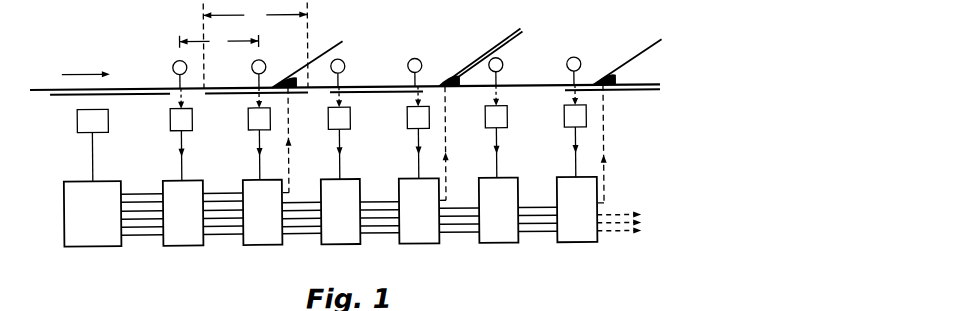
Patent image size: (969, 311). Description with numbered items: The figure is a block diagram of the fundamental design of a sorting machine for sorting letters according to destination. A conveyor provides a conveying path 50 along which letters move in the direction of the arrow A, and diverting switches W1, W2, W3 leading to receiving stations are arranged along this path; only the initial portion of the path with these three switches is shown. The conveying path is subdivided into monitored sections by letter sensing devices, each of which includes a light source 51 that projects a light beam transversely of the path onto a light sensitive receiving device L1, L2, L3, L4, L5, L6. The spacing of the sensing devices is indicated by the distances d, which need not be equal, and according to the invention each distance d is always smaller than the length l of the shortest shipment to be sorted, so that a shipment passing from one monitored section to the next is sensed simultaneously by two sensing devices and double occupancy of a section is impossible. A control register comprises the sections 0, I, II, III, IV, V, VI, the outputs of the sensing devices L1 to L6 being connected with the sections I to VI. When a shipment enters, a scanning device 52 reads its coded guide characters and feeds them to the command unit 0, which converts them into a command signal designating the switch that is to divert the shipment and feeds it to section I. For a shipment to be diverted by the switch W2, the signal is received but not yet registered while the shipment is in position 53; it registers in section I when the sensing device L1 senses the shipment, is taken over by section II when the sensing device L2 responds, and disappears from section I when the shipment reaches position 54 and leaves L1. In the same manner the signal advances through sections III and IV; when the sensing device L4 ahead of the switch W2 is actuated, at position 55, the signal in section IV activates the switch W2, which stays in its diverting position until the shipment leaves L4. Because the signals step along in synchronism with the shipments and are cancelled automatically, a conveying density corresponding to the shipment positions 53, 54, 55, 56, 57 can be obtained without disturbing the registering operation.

The conveying path 50 is at (152, 89).
The light source 51 is at (174, 63).
The scanning device 52 is at (77, 119).
The shipment position 53 is at (129, 97).
The shipment position 54 is at (226, 97).
The shipment position 55 is at (391, 97).
The shipment position 56 is at (492, 50).
The shipment position 57 is at (622, 97).
The light sensitive receiving device L1 is at (170, 119).
The light sensitive receiving device L2 is at (248, 119).
The light sensitive receiving device L3 is at (328, 119).
The light sensitive receiving device L4 is at (407, 121).
The light sensitive receiving device L5 is at (485, 118).
The light sensitive receiving device L6 is at (564, 116).
The diverting switch W1 is at (284, 78).
The diverting switch W2 is at (443, 77).
The diverting switch W3 is at (602, 77).
The arrow A is at (85, 66).
The length of shortest shipment l is at (255, 44).
The distance between sensing devices d is at (218, 40).
The command unit 0 is at (93, 228).
The control register section I is at (183, 227).
The control register section II is at (263, 227).
The control register section III is at (341, 226).
The control register section IV is at (419, 225).
The control register section V is at (499, 225).
The control register section VI is at (577, 224).